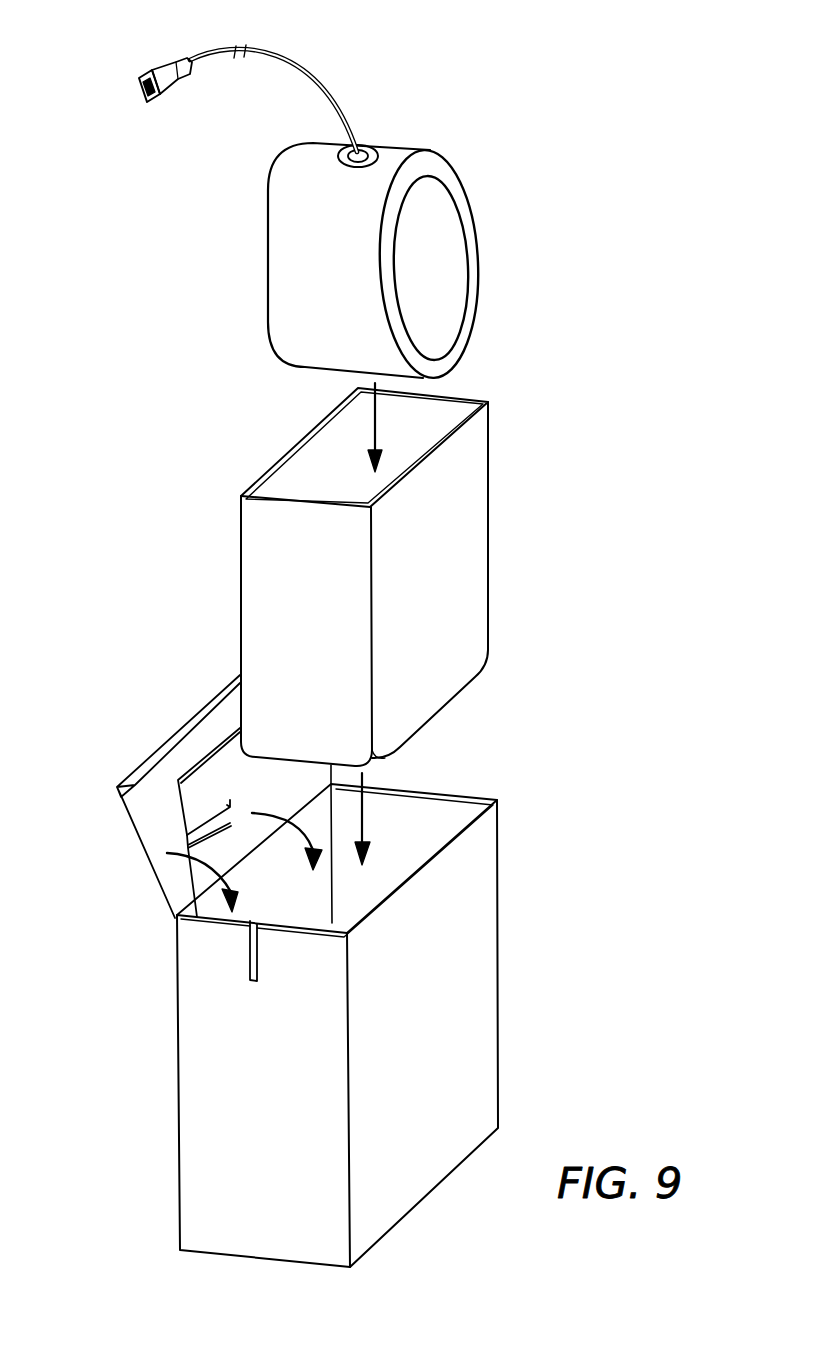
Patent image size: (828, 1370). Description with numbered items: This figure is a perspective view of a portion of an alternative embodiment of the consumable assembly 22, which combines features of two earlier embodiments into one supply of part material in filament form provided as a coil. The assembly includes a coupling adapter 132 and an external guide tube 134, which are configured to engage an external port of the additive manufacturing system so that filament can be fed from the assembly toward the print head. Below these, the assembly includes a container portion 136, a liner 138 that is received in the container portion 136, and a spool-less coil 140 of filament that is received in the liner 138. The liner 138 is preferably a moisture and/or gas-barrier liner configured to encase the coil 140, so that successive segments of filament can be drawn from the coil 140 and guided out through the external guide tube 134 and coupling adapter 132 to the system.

The consumable assembly 22 is at (95, 495).
The coupling adapter 132 is at (164, 82).
The external guide tube 134 is at (250, 54).
The container portion 136 is at (480, 972).
The liner 138 is at (473, 528).
The coil 140 is at (470, 222).